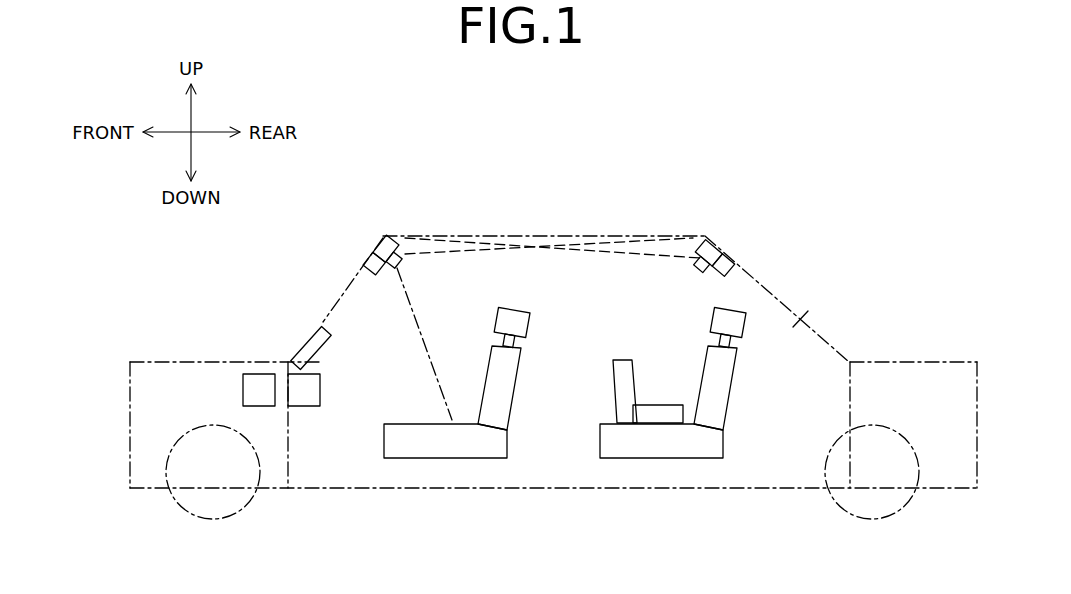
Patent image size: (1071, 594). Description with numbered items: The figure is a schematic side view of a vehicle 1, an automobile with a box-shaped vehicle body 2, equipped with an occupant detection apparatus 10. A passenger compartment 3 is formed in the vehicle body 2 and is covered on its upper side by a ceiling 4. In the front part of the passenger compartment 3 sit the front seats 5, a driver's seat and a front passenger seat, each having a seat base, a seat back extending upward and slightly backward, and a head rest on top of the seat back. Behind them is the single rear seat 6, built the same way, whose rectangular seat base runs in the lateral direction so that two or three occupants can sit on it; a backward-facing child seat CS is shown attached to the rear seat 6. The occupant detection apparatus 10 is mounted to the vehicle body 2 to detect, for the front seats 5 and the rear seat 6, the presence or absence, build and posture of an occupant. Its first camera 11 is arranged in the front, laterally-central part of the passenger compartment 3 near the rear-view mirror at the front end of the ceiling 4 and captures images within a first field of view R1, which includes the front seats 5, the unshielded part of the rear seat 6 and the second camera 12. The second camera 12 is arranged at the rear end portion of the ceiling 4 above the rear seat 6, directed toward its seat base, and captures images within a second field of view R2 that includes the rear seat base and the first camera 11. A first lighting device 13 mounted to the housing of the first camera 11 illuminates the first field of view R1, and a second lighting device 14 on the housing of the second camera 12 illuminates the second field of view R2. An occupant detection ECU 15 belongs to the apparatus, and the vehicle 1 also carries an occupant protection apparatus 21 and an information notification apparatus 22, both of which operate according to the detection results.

The vehicle 1 is at (790, 193).
The vehicle body 2 is at (872, 361).
The passenger compartment 3 is at (808, 311).
The ceiling 4 is at (537, 236).
The front seat 5 is at (466, 378).
The rear seat 6 is at (698, 403).
The occupant detection apparatus 10 is at (345, 447).
The first camera 11 is at (378, 249).
The second camera 12 is at (707, 240).
The first lighting device 13 is at (371, 263).
The second lighting device 14 is at (730, 260).
The occupant detection ECU 15 is at (252, 385).
The occupant protection apparatus 21 is at (297, 388).
The information notification apparatus 22 is at (313, 345).
The child seat CS is at (627, 422).
The first field of view R1 is at (412, 254).
The second field of view R2 is at (616, 254).